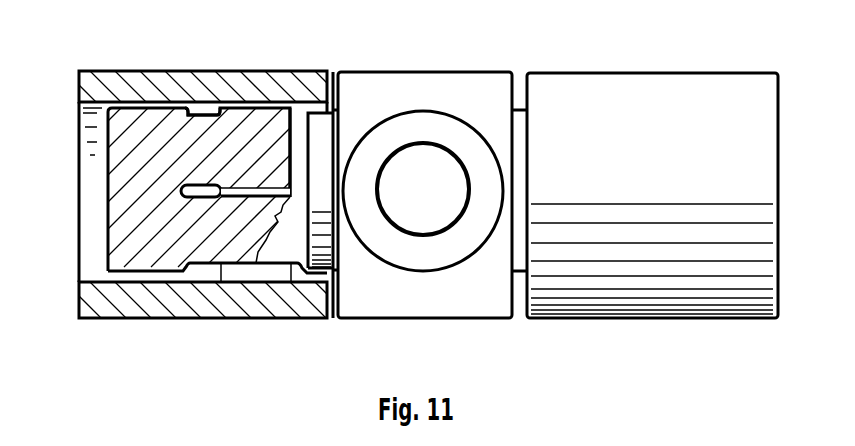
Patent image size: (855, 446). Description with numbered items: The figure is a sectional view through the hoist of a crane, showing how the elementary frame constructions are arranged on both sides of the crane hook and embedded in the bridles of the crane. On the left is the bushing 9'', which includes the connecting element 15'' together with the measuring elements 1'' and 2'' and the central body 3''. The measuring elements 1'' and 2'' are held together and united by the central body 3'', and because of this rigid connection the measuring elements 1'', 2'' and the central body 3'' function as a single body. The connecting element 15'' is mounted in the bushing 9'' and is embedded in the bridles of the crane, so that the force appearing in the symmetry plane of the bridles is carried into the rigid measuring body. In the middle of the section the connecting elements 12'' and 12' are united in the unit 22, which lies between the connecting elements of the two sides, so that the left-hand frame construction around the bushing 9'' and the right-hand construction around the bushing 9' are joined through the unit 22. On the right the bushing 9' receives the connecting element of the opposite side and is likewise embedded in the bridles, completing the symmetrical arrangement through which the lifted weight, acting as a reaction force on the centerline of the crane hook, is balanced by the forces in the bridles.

The measuring element 1'' is at (217, 271).
The measuring element 2'' is at (202, 82).
The central body 3'' is at (199, 156).
The bushing 9'' is at (195, 214).
The bushing 9' is at (652, 215).
The connecting element 12'' is at (335, 154).
The connecting element 12' is at (439, 179).
The connecting element 15'' is at (272, 119).
The unit 22 is at (459, 90).